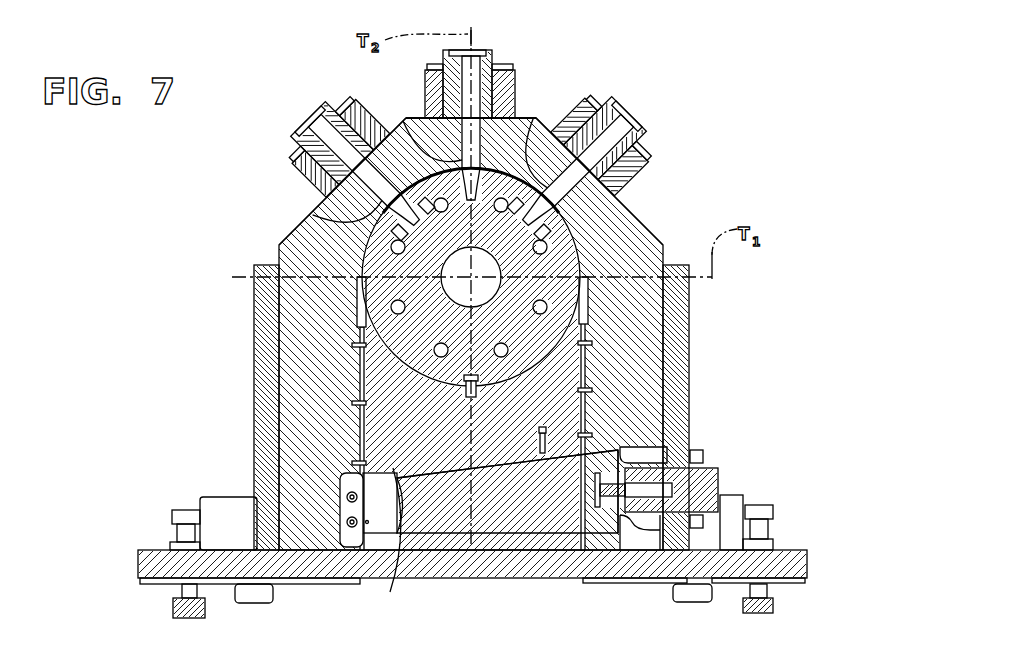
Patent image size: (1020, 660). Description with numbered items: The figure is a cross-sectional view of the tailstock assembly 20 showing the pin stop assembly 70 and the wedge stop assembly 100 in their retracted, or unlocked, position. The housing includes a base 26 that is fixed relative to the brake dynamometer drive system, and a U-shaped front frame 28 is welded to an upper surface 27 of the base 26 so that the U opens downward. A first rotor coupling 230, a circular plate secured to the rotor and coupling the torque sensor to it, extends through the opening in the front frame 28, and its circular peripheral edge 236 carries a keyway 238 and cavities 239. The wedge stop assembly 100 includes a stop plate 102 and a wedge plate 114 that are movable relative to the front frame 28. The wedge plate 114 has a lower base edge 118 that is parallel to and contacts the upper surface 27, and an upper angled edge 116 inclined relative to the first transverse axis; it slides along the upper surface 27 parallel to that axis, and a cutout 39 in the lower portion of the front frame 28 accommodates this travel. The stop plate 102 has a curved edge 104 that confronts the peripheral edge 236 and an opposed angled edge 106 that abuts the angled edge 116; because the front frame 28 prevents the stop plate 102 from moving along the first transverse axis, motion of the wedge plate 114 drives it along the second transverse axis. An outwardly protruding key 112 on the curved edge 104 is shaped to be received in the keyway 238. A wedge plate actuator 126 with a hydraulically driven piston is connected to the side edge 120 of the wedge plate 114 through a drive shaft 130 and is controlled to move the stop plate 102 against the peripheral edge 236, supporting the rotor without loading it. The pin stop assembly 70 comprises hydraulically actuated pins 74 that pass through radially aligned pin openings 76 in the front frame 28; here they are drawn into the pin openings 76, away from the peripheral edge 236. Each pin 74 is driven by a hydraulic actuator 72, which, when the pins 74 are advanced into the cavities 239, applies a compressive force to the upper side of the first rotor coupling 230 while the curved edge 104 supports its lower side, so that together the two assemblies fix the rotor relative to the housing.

The tailstock assembly 20 is at (720, 73).
The base 26 is at (476, 572).
The upper surface 27 is at (796, 549).
The U-shaped front frame 28 is at (641, 258).
The cutout 39 is at (641, 458).
The pin stop assembly 70 is at (272, 143).
The hydraulic actuator 72 is at (322, 120).
The pin 74 is at (543, 198).
The pin opening 76 is at (402, 140).
The wedge stop assembly 100 is at (520, 494).
The stop plate 102 is at (401, 541).
The curved edge 104 is at (600, 324).
The angled edge 106 is at (378, 548).
The key 112 is at (400, 408).
The wedge plate 114 is at (532, 522).
The upper angled edge 116 is at (592, 452).
The lower base edge 118 is at (593, 535).
The side edge 120 is at (628, 540).
The wedge plate actuator 126 is at (705, 481).
The drive shaft 130 is at (663, 492).
The first rotor coupling 230 is at (625, 235).
The peripheral edge 236 is at (362, 305).
The keyway 238 is at (393, 372).
The cavity 239 is at (550, 224).